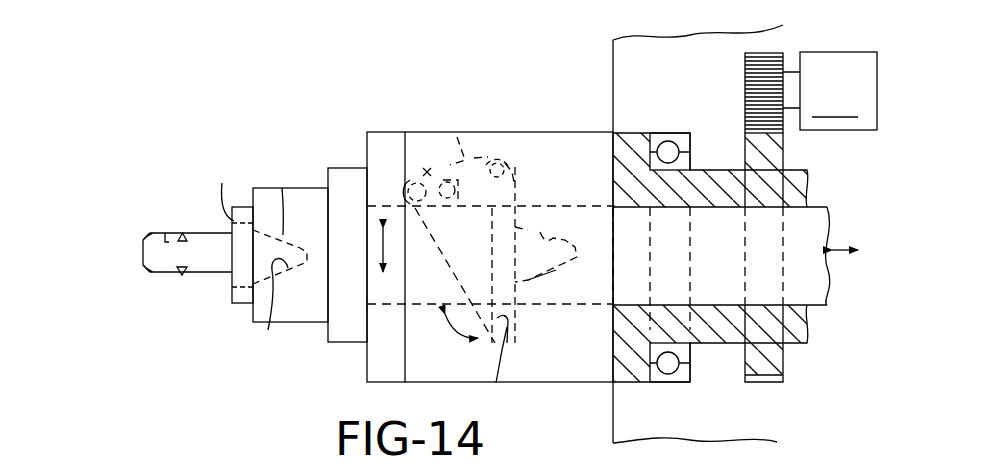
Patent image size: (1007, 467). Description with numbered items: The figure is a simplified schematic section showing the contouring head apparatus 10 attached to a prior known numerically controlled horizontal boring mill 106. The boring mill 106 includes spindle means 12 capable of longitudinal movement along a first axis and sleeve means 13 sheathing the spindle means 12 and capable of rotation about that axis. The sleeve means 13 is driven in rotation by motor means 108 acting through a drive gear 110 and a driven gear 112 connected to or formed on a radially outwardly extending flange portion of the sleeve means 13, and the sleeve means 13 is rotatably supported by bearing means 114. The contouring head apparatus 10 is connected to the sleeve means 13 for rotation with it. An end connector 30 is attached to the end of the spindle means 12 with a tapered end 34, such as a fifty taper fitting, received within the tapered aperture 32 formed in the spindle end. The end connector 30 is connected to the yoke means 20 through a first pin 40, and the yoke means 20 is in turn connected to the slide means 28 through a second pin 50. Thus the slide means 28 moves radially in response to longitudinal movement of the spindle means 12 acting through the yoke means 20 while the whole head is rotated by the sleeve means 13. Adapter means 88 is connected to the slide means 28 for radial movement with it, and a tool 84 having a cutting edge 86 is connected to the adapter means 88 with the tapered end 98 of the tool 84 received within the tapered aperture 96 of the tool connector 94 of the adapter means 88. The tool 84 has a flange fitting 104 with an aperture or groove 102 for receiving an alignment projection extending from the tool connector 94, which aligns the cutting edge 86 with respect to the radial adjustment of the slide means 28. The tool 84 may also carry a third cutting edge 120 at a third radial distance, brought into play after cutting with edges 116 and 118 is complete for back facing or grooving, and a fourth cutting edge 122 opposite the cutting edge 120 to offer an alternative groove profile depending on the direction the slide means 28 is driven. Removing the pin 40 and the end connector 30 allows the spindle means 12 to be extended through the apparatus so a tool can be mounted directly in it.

The contouring head apparatus 10 is at (558, 80).
The spindle means 12 is at (827, 207).
The sleeve means 13 is at (714, 344).
The yoke means 20 is at (455, 137).
The slide means 28 is at (375, 132).
The end connector 30 is at (490, 257).
The tapered aperture 32 is at (547, 225).
The tapered end 34 is at (556, 270).
The first pin 40 is at (496, 385).
The second pin 50 is at (427, 173).
The tool 84 is at (165, 236).
The cutting edge 86 is at (133, 276).
The adapter means 88 is at (350, 345).
The tool connector 94 is at (350, 168).
The tapered aperture 96 is at (268, 330).
The tapered end 98 is at (282, 170).
The aperture or groove 102 is at (222, 183).
The flange fitting 104 is at (240, 304).
The horizontal boring mill 106 is at (610, 53).
The motor means 108 is at (830, 91).
The drive gear 110 is at (745, 72).
The driven gear 112 is at (745, 145).
The bearing means 114 is at (678, 382).
The cutting edge 116 is at (144, 276).
The cutting edge 118 is at (143, 233).
The third cutting edge 120 is at (183, 233).
The fourth cutting edge 122 is at (182, 272).